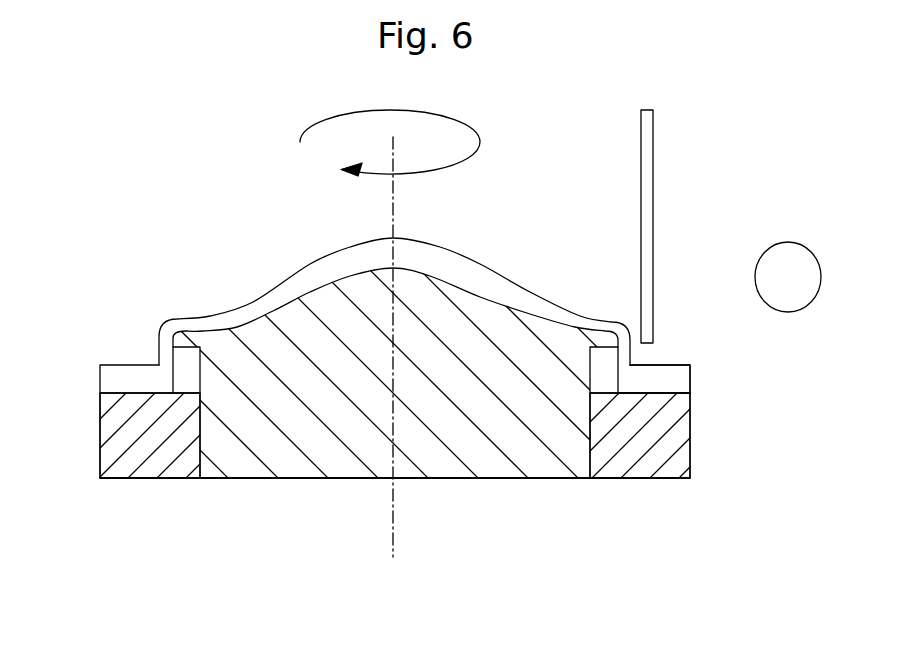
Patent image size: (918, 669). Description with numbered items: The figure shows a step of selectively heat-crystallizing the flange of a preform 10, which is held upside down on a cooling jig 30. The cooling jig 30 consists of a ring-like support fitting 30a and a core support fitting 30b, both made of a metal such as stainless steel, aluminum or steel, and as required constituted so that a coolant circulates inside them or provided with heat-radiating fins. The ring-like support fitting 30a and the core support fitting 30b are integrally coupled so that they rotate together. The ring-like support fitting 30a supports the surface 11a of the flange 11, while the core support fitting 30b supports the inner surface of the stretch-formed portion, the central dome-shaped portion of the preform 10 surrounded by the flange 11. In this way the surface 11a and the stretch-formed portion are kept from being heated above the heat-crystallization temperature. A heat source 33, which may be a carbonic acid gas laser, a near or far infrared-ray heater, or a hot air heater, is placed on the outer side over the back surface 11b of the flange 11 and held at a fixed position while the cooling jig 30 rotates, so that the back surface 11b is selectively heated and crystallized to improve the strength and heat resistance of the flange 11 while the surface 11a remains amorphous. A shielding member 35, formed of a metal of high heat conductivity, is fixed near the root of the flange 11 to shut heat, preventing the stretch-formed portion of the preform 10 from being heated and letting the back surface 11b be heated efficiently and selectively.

The preform 10 is at (448, 253).
The flange 11 is at (108, 382).
The surface of flange 11a is at (662, 395).
The back surface of flange 11b is at (670, 364).
The cooling jig 30 is at (303, 557).
The ring-like support fitting 30a is at (155, 478).
The core support fitting 30b is at (285, 478).
The heat source 33 is at (805, 243).
The shielding member 35 is at (653, 152).